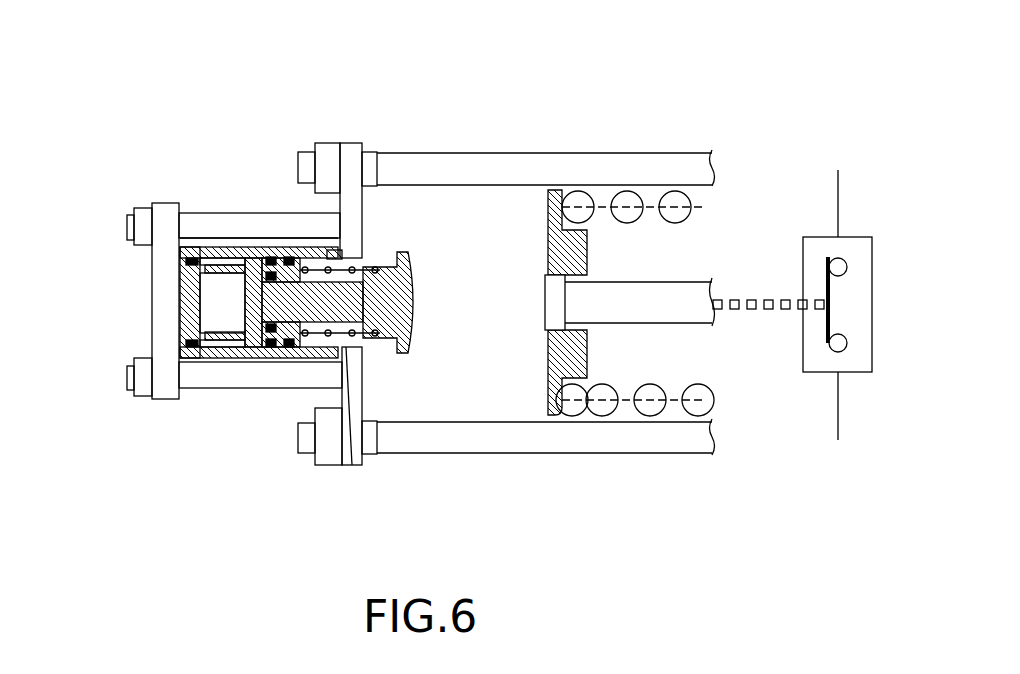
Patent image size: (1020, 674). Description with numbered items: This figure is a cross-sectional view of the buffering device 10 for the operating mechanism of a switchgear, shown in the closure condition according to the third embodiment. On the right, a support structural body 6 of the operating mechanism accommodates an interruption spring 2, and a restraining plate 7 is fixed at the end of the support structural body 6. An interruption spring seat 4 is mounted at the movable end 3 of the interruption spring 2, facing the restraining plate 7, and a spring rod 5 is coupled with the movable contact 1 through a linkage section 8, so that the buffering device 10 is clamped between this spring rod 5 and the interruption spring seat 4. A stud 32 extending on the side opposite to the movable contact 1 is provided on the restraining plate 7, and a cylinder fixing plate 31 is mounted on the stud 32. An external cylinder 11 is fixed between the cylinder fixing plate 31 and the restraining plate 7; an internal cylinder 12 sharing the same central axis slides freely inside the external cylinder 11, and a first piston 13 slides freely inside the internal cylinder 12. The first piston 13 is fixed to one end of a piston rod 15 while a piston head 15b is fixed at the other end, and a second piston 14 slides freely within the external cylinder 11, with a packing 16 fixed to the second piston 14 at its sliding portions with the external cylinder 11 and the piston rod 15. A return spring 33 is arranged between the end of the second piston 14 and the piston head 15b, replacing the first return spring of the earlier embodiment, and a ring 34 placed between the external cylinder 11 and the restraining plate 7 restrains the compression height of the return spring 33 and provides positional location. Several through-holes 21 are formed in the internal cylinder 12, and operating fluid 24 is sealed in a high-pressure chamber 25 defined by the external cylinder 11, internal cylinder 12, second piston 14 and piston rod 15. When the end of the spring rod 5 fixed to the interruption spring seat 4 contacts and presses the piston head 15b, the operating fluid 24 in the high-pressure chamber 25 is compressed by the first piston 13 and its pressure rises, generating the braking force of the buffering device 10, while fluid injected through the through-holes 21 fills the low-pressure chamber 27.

The movable contact 1 is at (826, 262).
The interruption spring 2 is at (625, 200).
The movable end 3 is at (570, 413).
The interruption spring seat 4 is at (547, 190).
The spring rod 5 is at (682, 293).
The support structural body 6 is at (648, 158).
The restraining plate 7 is at (347, 147).
The linkage section 8 is at (783, 300).
The buffering device 10 is at (233, 40).
The external cylinder 11 is at (192, 248).
The internal cylinder 12 is at (233, 255).
The first piston 13 is at (247, 263).
The second piston 14 is at (265, 260).
The piston rod 15 is at (368, 262).
The piston head 15b is at (415, 287).
The packing 16 is at (280, 263).
The through-holes 21 is at (224, 358).
The operating fluid 24 is at (212, 303).
The high-pressure chamber 25 is at (212, 277).
The low-pressure chamber 27 is at (213, 260).
The cylinder fixing plate 31 is at (166, 393).
The stud 32 is at (205, 380).
The return spring 33 is at (357, 333).
The ring 34 is at (361, 458).